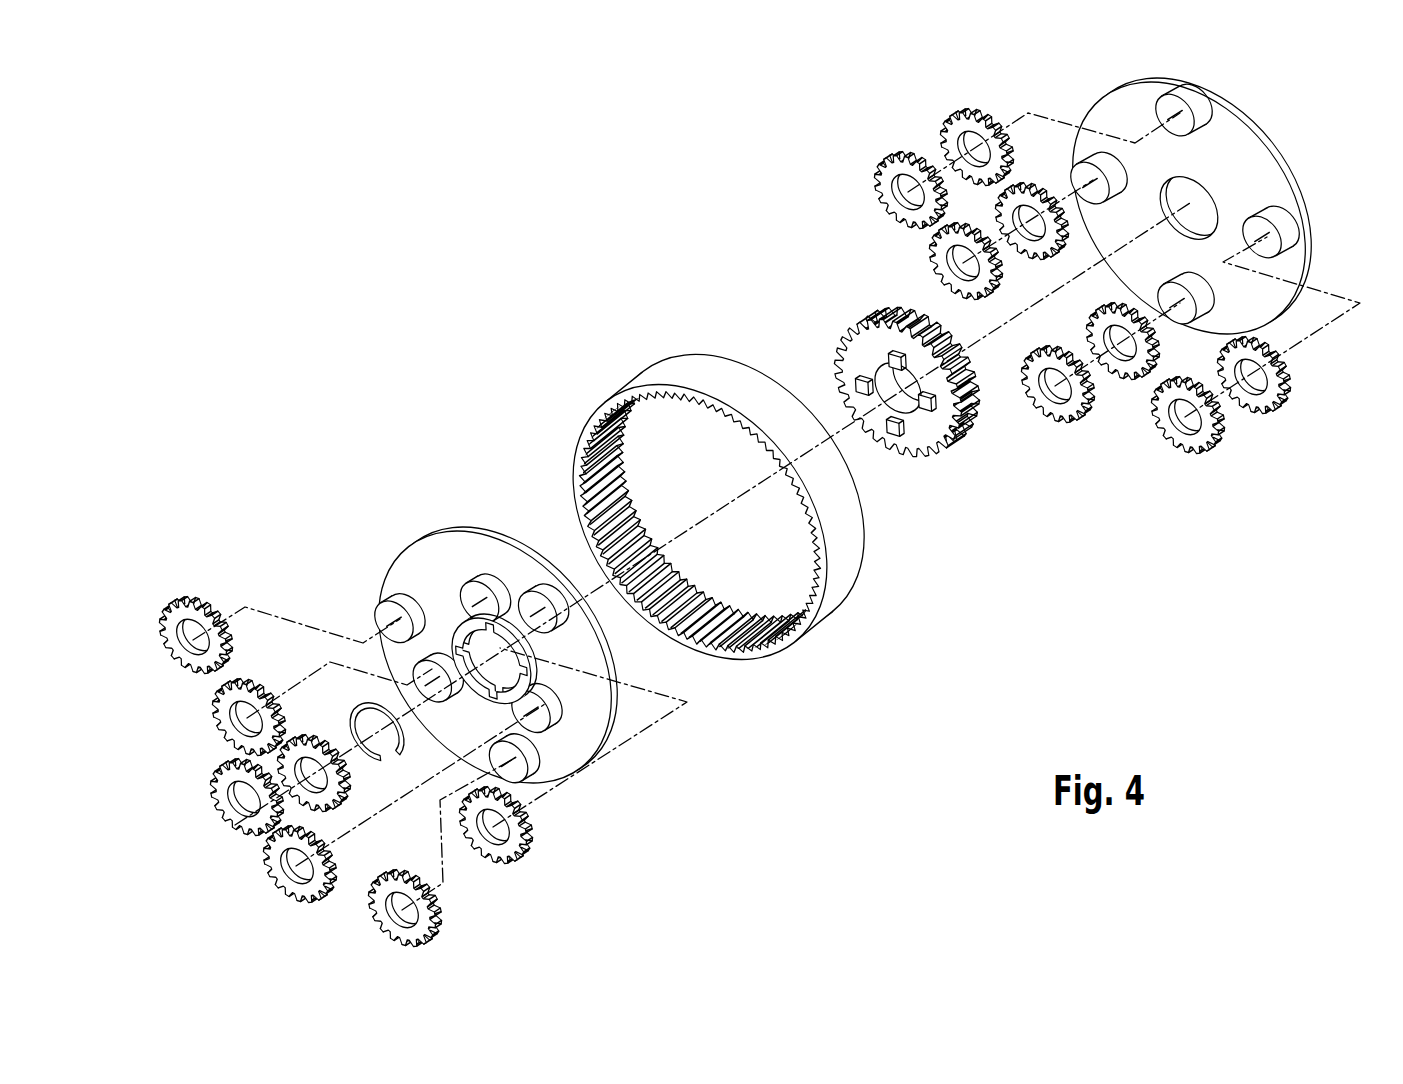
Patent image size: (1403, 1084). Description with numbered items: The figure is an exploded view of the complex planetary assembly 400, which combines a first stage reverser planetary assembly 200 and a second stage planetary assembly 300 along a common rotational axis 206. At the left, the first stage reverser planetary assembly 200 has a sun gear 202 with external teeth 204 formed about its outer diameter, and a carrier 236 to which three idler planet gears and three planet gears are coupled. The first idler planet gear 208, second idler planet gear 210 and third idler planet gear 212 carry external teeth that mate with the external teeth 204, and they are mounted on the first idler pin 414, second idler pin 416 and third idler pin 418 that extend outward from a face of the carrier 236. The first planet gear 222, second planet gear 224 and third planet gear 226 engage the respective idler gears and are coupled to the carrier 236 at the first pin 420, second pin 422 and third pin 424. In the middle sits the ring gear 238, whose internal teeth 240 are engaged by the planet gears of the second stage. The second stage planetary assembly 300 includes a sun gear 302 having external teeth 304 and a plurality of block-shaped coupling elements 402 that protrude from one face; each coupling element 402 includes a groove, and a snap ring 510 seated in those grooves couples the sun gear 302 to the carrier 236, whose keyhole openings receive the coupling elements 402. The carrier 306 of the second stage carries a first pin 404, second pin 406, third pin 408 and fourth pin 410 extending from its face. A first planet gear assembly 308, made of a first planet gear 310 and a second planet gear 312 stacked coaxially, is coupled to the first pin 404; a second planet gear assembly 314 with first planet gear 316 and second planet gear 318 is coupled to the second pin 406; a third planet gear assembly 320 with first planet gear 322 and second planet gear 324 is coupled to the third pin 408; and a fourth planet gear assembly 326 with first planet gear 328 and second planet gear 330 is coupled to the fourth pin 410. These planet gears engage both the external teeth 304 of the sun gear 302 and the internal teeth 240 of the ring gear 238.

The complex planetary assembly 400 is at (755, 504).
The first stage reverser planetary assembly 200 is at (406, 653).
The second stage planetary assembly 300 is at (1069, 349).
The sun gear 202 is at (384, 733).
The external teeth 204 is at (345, 795).
The rotational axis 206 is at (785, 507).
The first idler planet gear 208 is at (272, 870).
The second idler planet gear 210 is at (220, 730).
The third idler planet gear 212 is at (220, 808).
The first planet gear 222 is at (438, 935).
The second planet gear 224 is at (530, 843).
The third planet gear 226 is at (185, 602).
The carrier 236 is at (490, 646).
The ring gear 238 is at (736, 493).
The internal teeth 240 is at (627, 507).
The sun gear 302 is at (884, 407).
The external teeth 304 is at (918, 376).
The carrier 306 is at (1221, 203).
The first planet gear assembly 308 is at (887, 139).
The first planet gear 310 is at (878, 182).
The second planet gear 312 is at (975, 113).
The second planet gear assembly 314 is at (1275, 421).
The first planet gear 316 is at (1181, 457).
The second planet gear 318 is at (1293, 384).
The third planet gear assembly 320 is at (1096, 436).
The first planet gear 322 is at (1050, 427).
The second planet gear 324 is at (1115, 383).
The fourth planet gear assembly 326 is at (930, 259).
The first planet gear 328 is at (940, 262).
The second planet gear 330 is at (1033, 258).
The coupling elements 402 is at (866, 342).
The first pin 404 is at (1184, 110).
The second pin 406 is at (1271, 231).
The third pin 408 is at (1186, 298).
The fourth pin 410 is at (1099, 178).
The first idler pin 414 is at (536, 708).
The second idler pin 416 is at (485, 598).
The third idler pin 418 is at (494, 659).
The first pin 420 is at (514, 758).
The second pin 422 is at (543, 608).
The third pin 424 is at (399, 618).
The snap ring 510 is at (355, 708).